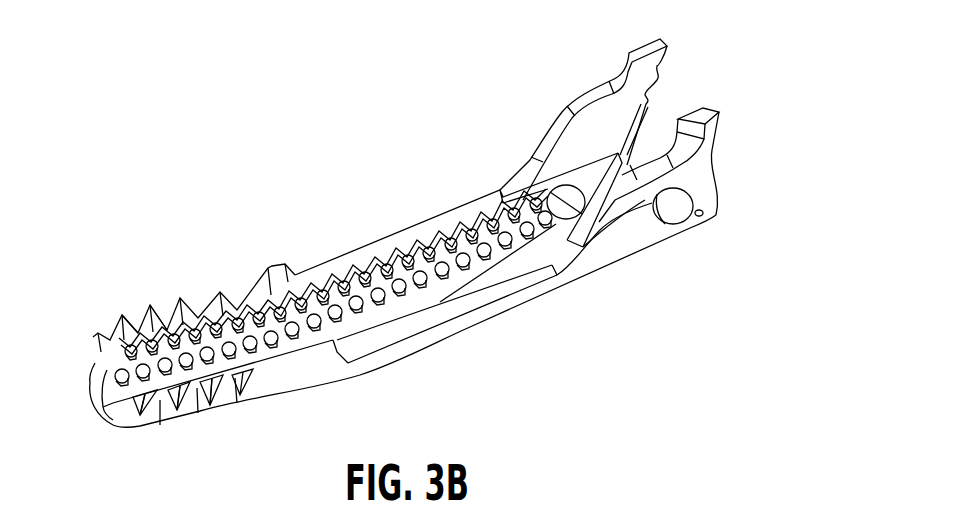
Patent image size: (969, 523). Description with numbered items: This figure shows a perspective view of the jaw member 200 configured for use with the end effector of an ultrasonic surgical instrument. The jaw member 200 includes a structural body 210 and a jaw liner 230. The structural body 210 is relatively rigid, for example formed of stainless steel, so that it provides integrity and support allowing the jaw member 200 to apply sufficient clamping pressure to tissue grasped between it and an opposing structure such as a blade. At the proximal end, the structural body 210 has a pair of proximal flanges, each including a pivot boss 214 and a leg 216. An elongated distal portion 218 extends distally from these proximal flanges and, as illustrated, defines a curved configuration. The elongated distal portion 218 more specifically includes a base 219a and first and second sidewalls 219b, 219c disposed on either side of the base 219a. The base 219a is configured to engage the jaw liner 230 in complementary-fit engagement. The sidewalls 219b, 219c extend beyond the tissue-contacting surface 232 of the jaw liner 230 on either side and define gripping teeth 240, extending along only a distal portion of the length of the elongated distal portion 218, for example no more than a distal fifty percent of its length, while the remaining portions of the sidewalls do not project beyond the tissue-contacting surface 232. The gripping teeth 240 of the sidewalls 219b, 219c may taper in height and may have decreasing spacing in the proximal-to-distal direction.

The jaw member 200 is at (296, 153).
The structural body 210 is at (440, 318).
The pivot boss 214 is at (703, 214).
The leg 216 is at (690, 127).
The elongated distal portion 218 is at (508, 308).
The base 219a is at (98, 416).
The first sidewall 219b is at (213, 290).
The second sidewall 219c is at (238, 402).
The jaw liner 230 is at (413, 265).
The tissue-contacting surface 232 is at (257, 322).
The gripping teeth 240 is at (155, 307).